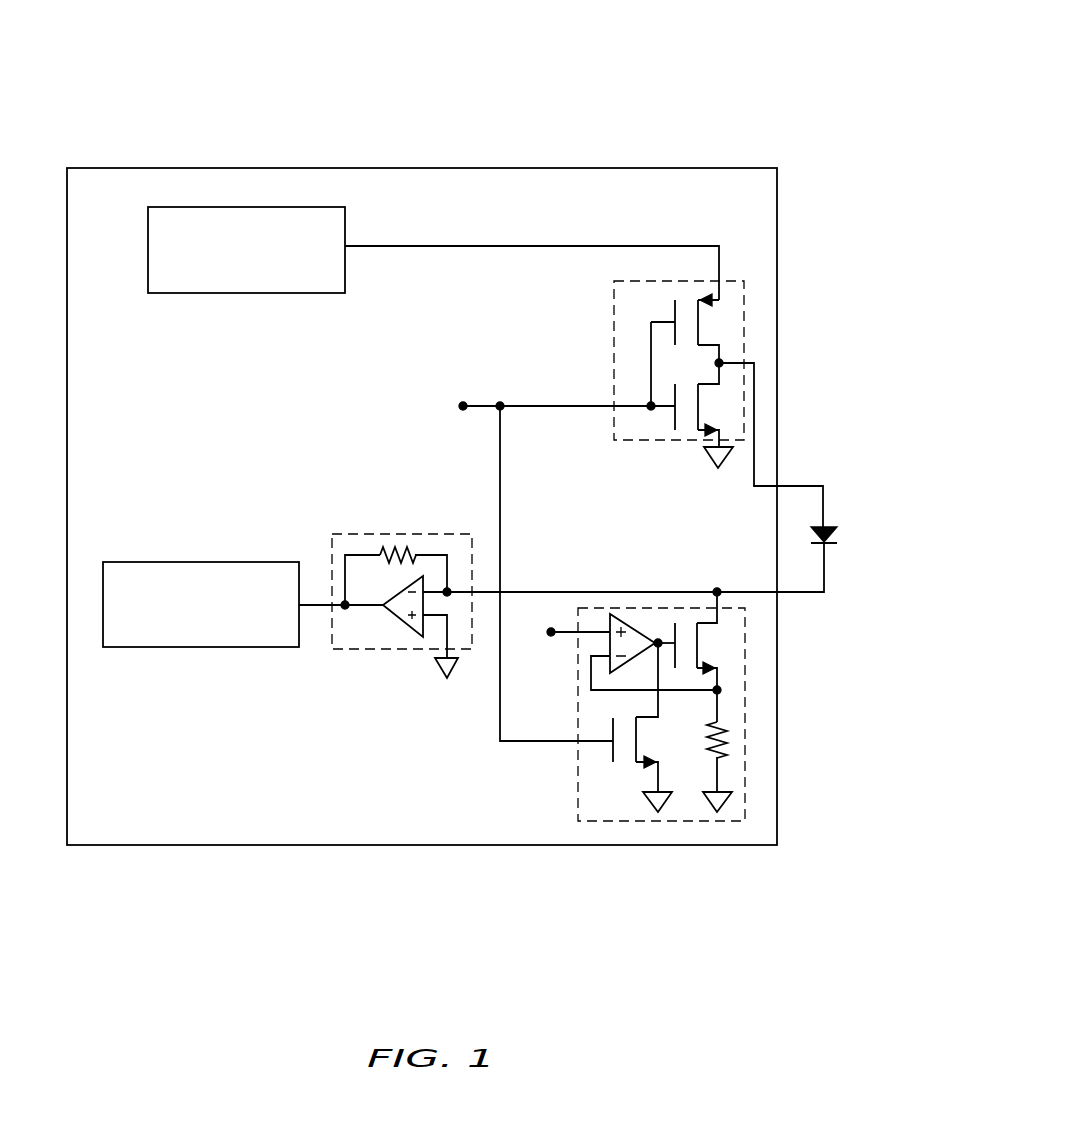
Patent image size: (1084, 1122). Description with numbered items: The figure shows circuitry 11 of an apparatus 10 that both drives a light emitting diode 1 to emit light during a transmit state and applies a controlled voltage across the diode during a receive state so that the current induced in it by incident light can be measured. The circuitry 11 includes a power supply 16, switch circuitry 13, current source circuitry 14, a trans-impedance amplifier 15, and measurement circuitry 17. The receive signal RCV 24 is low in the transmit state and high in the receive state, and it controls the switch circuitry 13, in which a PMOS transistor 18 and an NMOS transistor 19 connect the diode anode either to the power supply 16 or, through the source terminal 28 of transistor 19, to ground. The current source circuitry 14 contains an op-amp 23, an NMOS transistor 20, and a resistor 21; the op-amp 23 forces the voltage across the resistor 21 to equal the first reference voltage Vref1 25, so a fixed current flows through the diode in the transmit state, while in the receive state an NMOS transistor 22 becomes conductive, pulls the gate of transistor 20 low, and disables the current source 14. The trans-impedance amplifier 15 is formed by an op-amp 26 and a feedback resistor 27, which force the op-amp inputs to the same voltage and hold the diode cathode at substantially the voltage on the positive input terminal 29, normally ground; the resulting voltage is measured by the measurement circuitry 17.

The diode / light emitting diode 1 is at (838, 535).
The apparatus 10 is at (733, 58).
The circuitry 11 is at (458, 168).
The switch circuitry 13 is at (744, 290).
The current source circuitry 14 is at (670, 822).
The trans-impedance amplifier 15 is at (353, 534).
The power supply 16 is at (218, 293).
The measurement circuitry 17 is at (195, 562).
The P-type MOS (PMOS) transistor 18 is at (698, 325).
The N-type MOS (NMOS) transistor 19 is at (698, 405).
The N-type MOS transistor 20 is at (697, 648).
The resistor 21 is at (728, 745).
The N-type MOS transistor 22 is at (632, 770).
The op-amp 23 is at (625, 620).
The receive signal (RCV) 24 is at (560, 406).
The first reference voltage (Vref1) 25 is at (551, 630).
The operational amplifier (op-amp) 26 is at (400, 625).
The feedback resistor 27 is at (385, 545).
The source terminal 28 is at (719, 437).
The positive input terminal 29 is at (432, 620).